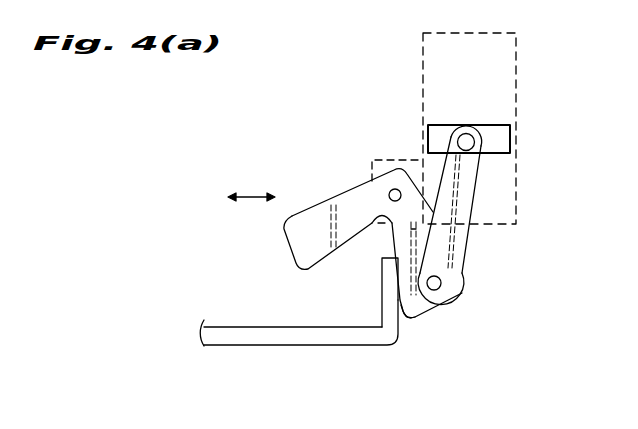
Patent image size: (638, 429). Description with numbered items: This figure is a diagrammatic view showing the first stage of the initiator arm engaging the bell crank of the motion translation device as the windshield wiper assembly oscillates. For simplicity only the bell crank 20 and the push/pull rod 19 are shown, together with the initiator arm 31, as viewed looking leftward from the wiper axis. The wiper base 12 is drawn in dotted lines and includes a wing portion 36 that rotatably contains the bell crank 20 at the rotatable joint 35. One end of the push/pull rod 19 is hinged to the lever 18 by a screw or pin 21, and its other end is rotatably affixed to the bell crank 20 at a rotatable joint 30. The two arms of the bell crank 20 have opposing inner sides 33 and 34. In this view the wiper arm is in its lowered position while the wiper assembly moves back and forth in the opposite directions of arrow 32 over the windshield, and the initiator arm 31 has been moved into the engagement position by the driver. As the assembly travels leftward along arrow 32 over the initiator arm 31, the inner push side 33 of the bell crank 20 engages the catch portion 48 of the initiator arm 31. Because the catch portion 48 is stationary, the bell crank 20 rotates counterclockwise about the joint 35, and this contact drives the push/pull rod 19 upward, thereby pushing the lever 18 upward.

The wiper base 12 is at (517, 61).
The lever 18 is at (489, 125).
The pin 21 is at (460, 135).
The push/pull rod 19 is at (474, 196).
The wing portion 36 is at (382, 160).
The rotatable joint 35 is at (390, 190).
The bell crank 20 is at (371, 269).
The inner side 34 is at (322, 259).
The inner side 33 is at (404, 317).
The rotatable joint 30 is at (448, 283).
The arrow 32 is at (247, 193).
The initiator arm 31 is at (290, 346).
The catch portion 48 is at (382, 284).